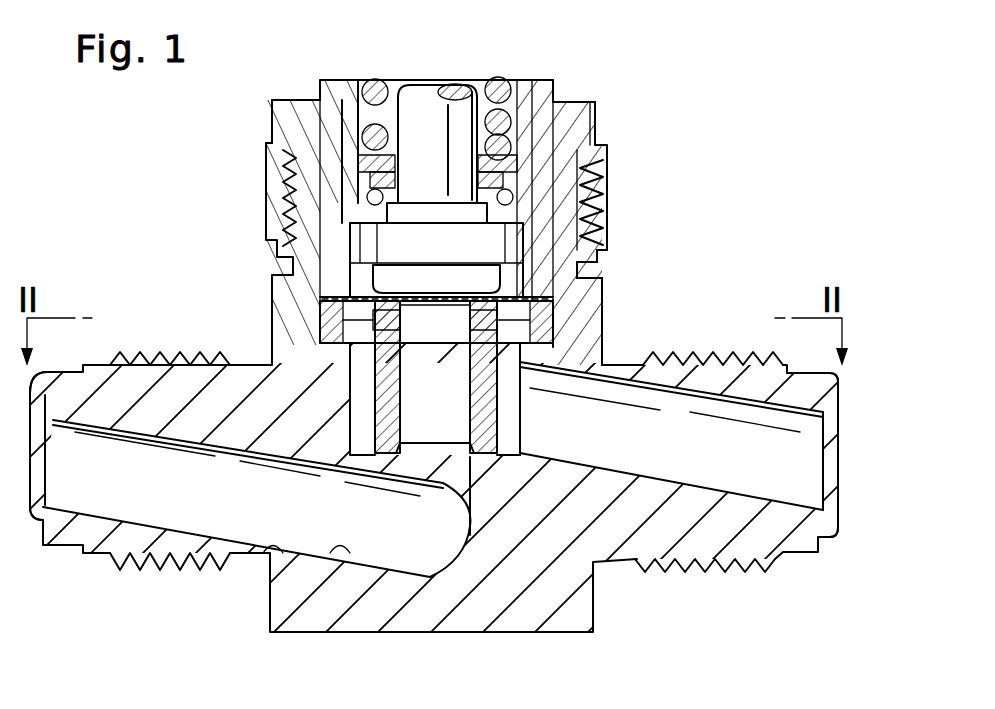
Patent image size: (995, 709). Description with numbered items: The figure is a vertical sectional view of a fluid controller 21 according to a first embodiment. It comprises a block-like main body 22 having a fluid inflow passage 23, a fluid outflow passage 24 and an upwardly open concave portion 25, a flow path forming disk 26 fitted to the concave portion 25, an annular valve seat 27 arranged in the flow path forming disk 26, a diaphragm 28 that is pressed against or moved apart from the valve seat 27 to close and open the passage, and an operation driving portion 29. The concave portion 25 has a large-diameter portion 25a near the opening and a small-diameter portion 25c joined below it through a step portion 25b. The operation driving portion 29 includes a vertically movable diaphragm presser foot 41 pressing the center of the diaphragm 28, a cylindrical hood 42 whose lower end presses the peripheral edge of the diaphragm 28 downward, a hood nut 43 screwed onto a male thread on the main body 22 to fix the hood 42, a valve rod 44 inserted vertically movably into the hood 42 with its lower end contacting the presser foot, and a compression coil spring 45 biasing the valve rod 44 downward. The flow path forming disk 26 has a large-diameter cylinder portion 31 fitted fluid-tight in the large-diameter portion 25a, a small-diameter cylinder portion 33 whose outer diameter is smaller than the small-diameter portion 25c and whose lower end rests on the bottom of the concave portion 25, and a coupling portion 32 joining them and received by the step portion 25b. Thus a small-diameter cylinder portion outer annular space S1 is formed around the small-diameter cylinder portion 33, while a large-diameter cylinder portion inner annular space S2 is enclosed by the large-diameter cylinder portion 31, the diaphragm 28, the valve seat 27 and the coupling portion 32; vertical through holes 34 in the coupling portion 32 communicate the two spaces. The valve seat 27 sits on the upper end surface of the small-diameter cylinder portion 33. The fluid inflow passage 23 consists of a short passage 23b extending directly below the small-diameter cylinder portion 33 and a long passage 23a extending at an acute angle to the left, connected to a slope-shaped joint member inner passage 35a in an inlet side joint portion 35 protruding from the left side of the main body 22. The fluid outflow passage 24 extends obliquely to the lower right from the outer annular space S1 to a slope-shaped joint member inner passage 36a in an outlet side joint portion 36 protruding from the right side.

The fluid controller 21 is at (662, 160).
The main body 22 is at (543, 634).
The fluid inflow passage 23 is at (262, 560).
The long passage 23a is at (340, 553).
The short passage 23b is at (432, 575).
The fluid outflow passage 24 is at (633, 545).
The concave portion 25 is at (560, 250).
The large-diameter portion 25a is at (580, 205).
The step portion 25b is at (560, 322).
The small-diameter portion 25c is at (560, 366).
The flow path forming disk 26 is at (480, 418).
The valve seat 27 is at (380, 318).
The diaphragm 28 is at (335, 297).
The operation driving portion 29 is at (520, 125).
The large-diameter cylinder portion 31 is at (330, 327).
The coupling portion 32 is at (297, 353).
The small-diameter cylinder portion 33 is at (390, 424).
The through holes 34 is at (355, 360).
The inlet side joint portion 35 is at (100, 562).
The joint member inner passage 35a is at (72, 540).
The outlet side joint portion 36 is at (770, 560).
The joint member inner passage 36a is at (807, 555).
The diaphragm presser foot 41 is at (400, 270).
The hood 42 is at (330, 188).
The hood nut 43 is at (302, 138).
The valve rod 44 is at (425, 105).
The compression coil spring 45 is at (498, 110).
The small-diameter cylinder portion outer annular space S1 is at (350, 440).
The large-diameter cylinder portion inner annular space S2 is at (490, 360).